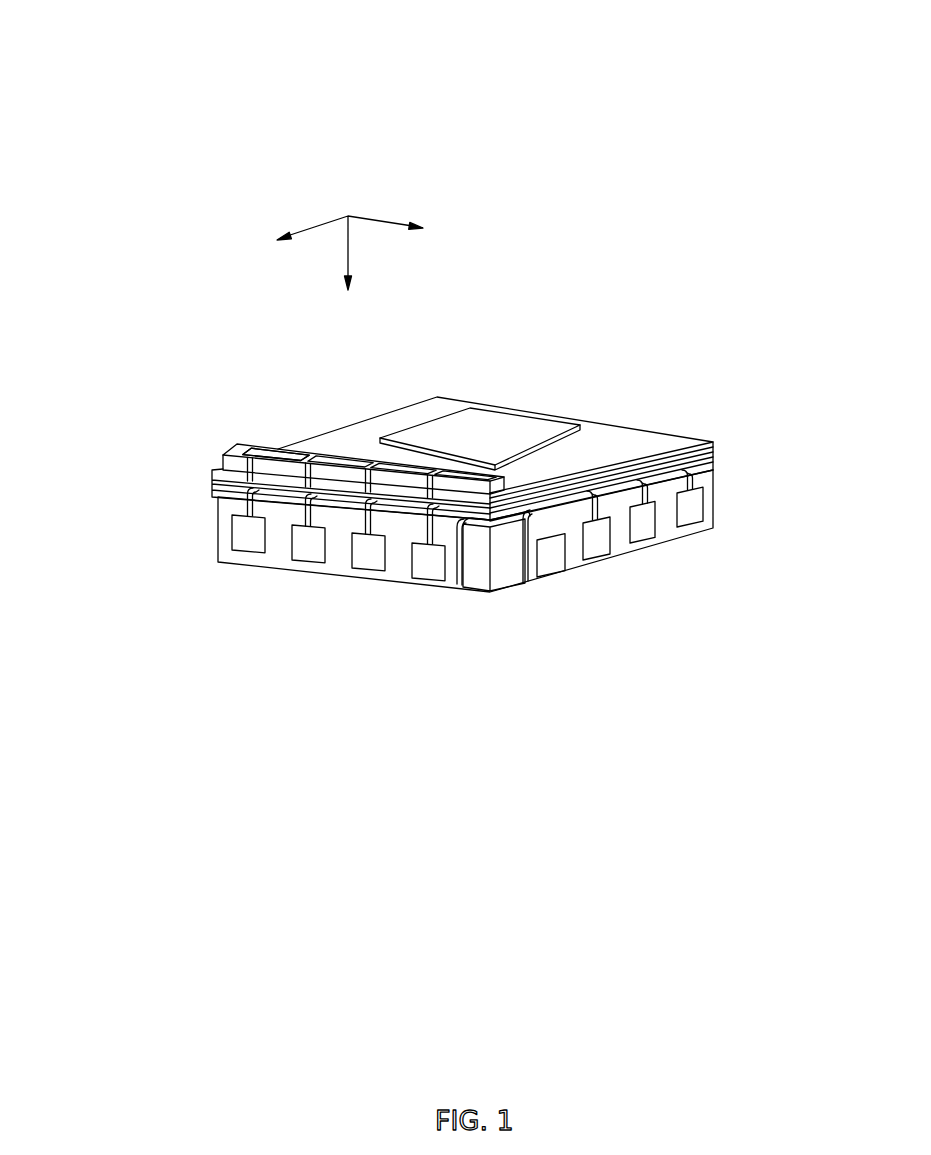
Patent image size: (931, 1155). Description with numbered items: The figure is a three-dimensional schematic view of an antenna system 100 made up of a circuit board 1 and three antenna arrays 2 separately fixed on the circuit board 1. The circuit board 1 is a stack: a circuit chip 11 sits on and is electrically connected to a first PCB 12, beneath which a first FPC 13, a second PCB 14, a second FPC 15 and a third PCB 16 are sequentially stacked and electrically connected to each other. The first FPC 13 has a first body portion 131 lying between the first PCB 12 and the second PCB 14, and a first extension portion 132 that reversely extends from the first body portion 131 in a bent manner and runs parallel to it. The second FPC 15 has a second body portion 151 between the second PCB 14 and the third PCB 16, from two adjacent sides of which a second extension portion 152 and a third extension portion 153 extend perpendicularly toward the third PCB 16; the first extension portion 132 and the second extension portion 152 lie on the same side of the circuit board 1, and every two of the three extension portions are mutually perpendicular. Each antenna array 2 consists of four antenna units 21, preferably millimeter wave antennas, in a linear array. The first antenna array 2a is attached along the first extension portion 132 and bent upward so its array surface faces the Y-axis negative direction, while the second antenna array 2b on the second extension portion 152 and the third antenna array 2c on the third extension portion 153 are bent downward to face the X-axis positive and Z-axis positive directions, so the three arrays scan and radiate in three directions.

The antenna system 100 is at (418, 40).
The circuit board 1 is at (609, 408).
The circuit chip 11 is at (487, 428).
The first PCB 12 is at (662, 445).
The first FPC 13 is at (115, 413).
The first body portion 131 is at (217, 470).
The first extension portion 132 is at (247, 455).
The second PCB 14 is at (707, 453).
The third PCB 16 is at (712, 463).
The antenna array 2 is at (236, 552).
The first antenna array 2a is at (279, 444).
The second antenna array 2b is at (363, 562).
The third antenna array 2c is at (649, 530).
The antenna unit 21 is at (310, 543).
The second FPC 15 is at (577, 657).
The second body portion 151 is at (487, 560).
The second extension portion 152 is at (452, 560).
The third extension portion 153 is at (532, 567).